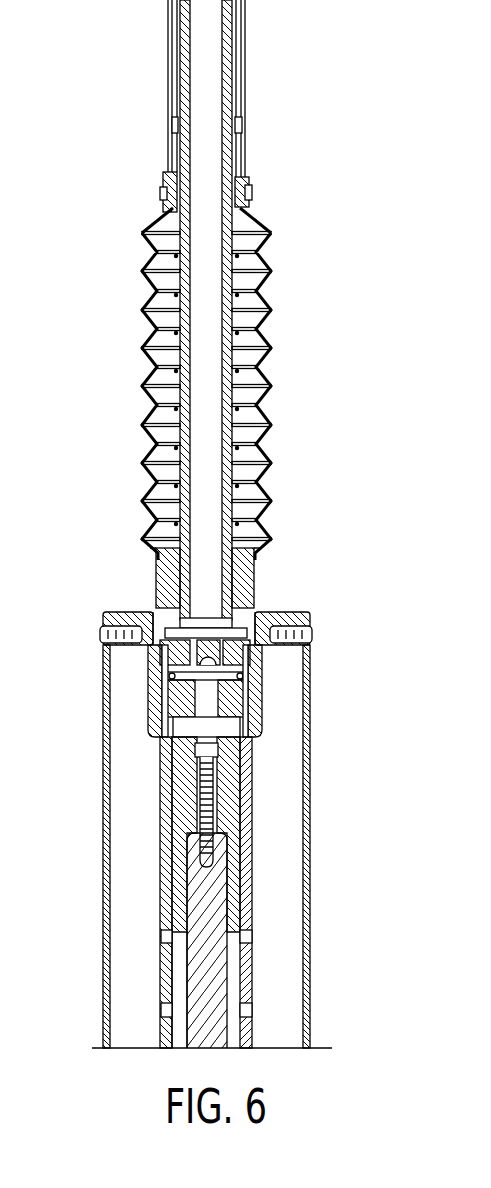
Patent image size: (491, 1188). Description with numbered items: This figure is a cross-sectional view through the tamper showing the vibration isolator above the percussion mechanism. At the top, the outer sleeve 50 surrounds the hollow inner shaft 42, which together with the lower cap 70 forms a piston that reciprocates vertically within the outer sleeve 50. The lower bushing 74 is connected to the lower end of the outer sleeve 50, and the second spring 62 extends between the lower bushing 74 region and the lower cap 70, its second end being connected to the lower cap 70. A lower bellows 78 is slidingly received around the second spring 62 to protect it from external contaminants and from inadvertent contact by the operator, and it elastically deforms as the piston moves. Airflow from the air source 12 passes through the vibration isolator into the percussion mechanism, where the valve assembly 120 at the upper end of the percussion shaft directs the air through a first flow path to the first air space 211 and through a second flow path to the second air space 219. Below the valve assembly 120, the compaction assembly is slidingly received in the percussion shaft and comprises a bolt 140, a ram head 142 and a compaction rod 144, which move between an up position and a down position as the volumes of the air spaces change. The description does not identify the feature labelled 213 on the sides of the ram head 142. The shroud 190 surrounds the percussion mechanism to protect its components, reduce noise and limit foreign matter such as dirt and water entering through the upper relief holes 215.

The air source 12 is at (0, 194).
The outer sleeve 50 is at (247, 32).
The lower bushing 74 is at (165, 188).
The hollow inner shaft 42 is at (257, 228).
The second spring 62 is at (235, 337).
The lower bellows 78 is at (263, 410).
The lower cap 70 is at (160, 556).
The valve assembly 120 is at (255, 662).
The first air space 211 is at (220, 727).
The shroud 190 is at (103, 775).
The ram head 142 is at (237, 785).
The bolt 140 is at (217, 830).
The groove 213 is at (160, 937).
The second air space 219 is at (177, 965).
The compaction rod 144 is at (203, 987).
The upper relief holes 215 is at (173, 1008).